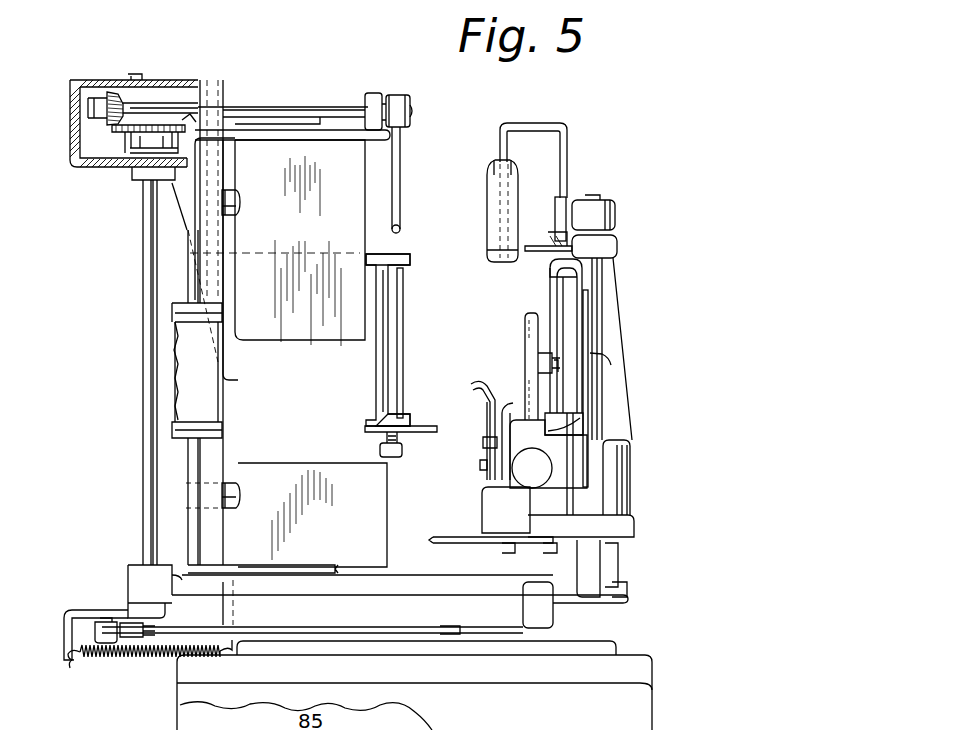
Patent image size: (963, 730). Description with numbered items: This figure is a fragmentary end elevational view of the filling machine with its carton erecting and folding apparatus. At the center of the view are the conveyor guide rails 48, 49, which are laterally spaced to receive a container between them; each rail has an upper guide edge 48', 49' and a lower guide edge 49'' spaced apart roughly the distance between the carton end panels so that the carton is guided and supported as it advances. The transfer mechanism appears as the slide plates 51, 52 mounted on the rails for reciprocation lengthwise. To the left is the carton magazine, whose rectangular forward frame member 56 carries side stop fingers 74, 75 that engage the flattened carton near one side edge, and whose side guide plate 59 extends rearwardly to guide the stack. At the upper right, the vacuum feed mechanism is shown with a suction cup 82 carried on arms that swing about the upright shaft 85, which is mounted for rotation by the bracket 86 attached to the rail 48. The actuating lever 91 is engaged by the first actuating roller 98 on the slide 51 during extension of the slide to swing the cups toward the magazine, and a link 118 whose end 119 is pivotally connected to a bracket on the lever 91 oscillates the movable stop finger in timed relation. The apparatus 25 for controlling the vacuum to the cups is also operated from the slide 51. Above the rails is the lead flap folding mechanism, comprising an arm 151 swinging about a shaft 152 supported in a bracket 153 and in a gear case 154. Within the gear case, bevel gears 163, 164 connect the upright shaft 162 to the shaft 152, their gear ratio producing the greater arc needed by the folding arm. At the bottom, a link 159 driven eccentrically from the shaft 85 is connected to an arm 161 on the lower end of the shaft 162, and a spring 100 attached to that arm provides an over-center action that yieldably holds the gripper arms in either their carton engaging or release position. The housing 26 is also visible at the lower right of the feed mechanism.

The gear case 154 is at (116, 80).
The bevel gear 164 is at (110, 120).
The bevel gear 163 is at (126, 130).
The upright shaft 162 is at (143, 500).
The shaft 152 is at (247, 105).
The bracket 153 is at (373, 93).
The arm 151 is at (402, 176).
The side stop finger 74 is at (233, 200).
The side stop finger 75 is at (237, 500).
The side guide plate 59 is at (188, 355).
The forward frame member 56 is at (188, 458).
The guide rail 49 is at (372, 355).
The upper guide edge 49' is at (412, 256).
The lower guide edge 49'' is at (529, 407).
The slide plate 52 is at (404, 345).
The suction cup 82 is at (556, 200).
The bracket 86 is at (615, 248).
The shaft 85 is at (604, 326).
The guide rail 48 is at (613, 335).
The upper guide edge 48' is at (522, 281).
The slide plate 51 is at (560, 298).
The actuating lever 91 is at (526, 334).
The first actuating roller 98 is at (545, 360).
The link 118 is at (486, 400).
The end of link 119 is at (484, 455).
The vacuum control apparatus 25 is at (595, 488).
The housing 26 is at (635, 460).
The link 159 is at (338, 633).
The arm 161 is at (66, 616).
The spring 100 is at (120, 660).